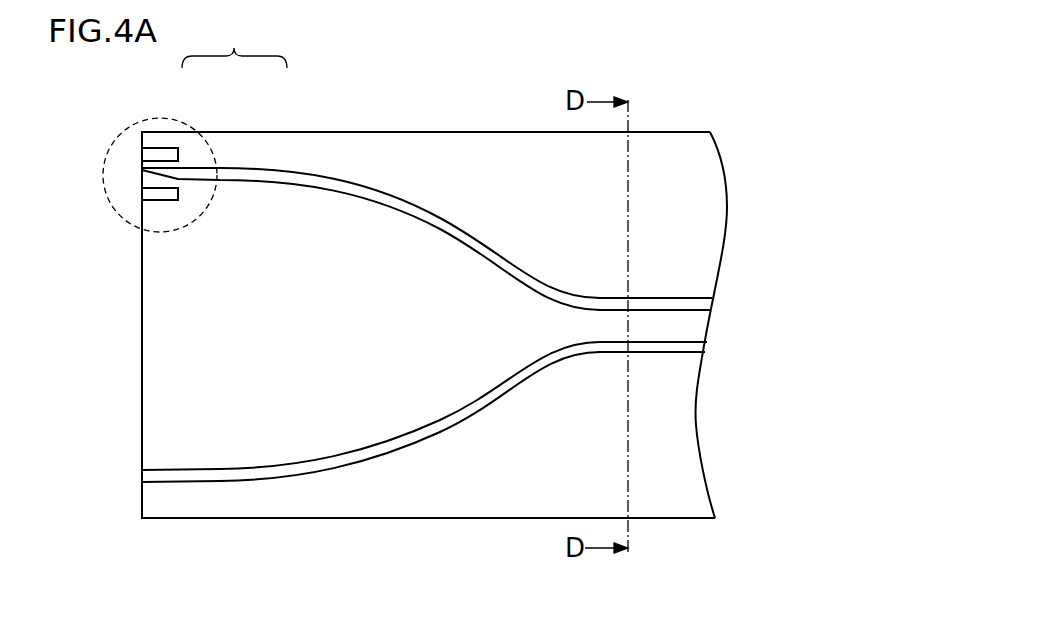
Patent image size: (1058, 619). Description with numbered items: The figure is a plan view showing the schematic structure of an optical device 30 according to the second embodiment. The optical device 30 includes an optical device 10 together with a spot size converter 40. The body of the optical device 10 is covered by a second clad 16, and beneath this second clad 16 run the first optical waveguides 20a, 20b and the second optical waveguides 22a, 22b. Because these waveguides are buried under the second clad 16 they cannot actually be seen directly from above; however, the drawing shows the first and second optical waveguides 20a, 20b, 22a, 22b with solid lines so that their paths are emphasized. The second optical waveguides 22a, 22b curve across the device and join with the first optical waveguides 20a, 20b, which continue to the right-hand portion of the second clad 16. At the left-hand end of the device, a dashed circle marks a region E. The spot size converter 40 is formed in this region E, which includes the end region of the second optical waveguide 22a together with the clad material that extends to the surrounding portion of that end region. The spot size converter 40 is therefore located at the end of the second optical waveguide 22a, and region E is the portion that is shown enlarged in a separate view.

The optical device 10 is at (247, 123).
The second clad 16 is at (673, 143).
The first optical waveguide 20a is at (673, 305).
The first optical waveguide 20b is at (673, 347).
The second optical waveguide 22a is at (347, 187).
The second optical waveguide 22b is at (343, 463).
The optical device 30 is at (248, 44).
The spot size converter 40 is at (173, 133).
The region E is at (150, 117).